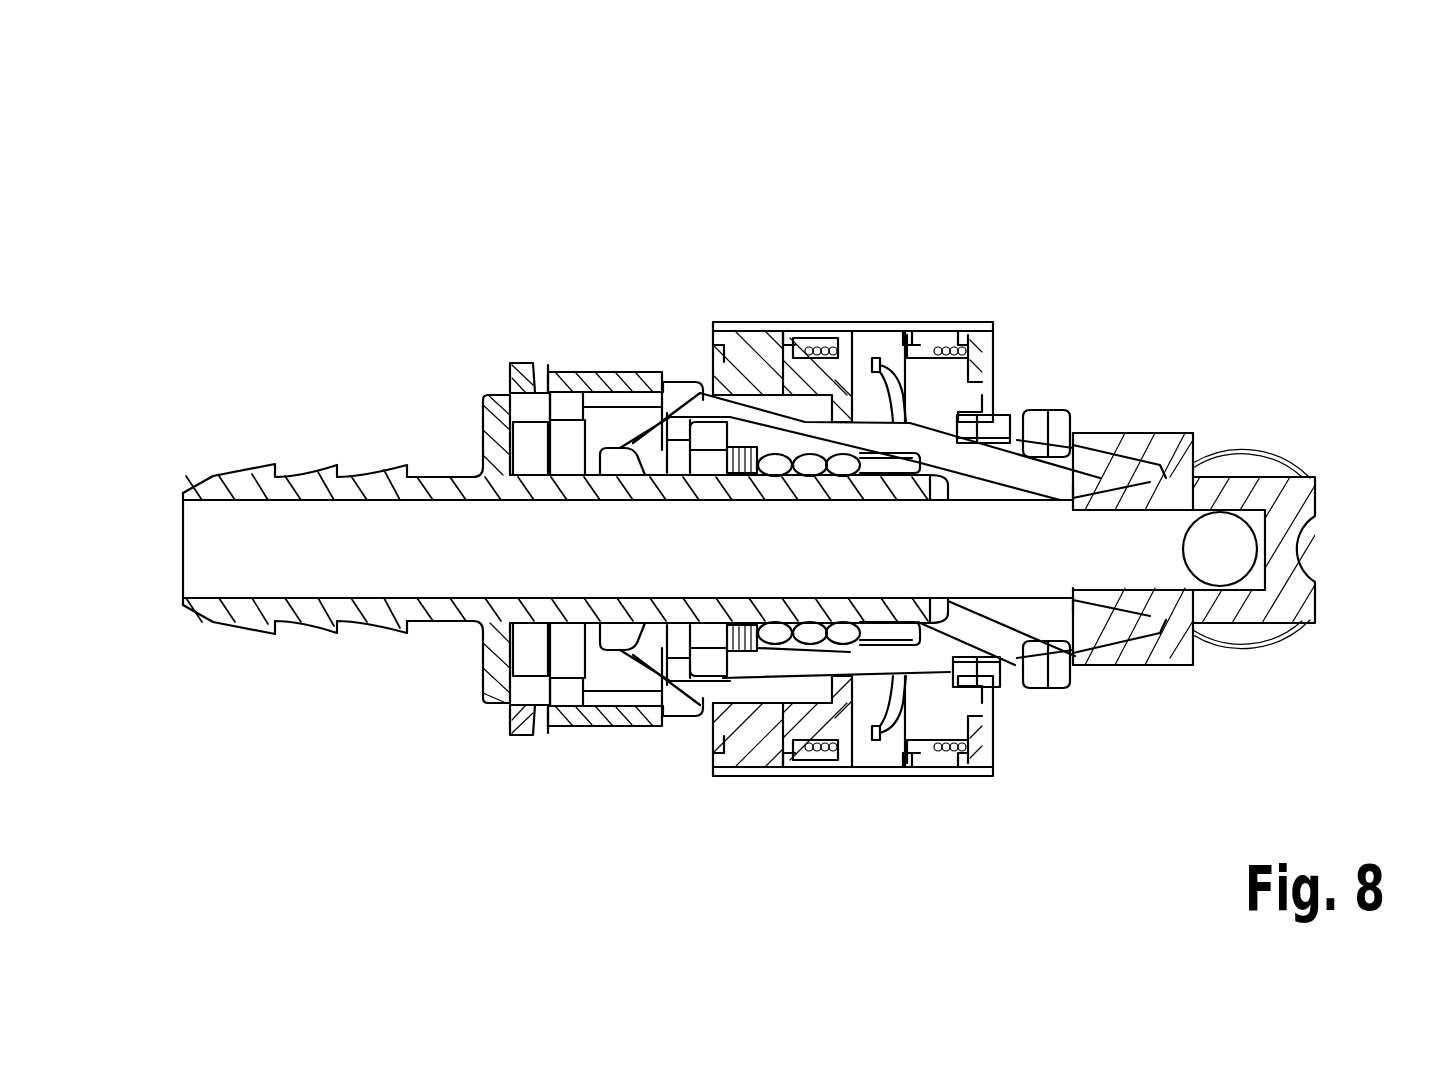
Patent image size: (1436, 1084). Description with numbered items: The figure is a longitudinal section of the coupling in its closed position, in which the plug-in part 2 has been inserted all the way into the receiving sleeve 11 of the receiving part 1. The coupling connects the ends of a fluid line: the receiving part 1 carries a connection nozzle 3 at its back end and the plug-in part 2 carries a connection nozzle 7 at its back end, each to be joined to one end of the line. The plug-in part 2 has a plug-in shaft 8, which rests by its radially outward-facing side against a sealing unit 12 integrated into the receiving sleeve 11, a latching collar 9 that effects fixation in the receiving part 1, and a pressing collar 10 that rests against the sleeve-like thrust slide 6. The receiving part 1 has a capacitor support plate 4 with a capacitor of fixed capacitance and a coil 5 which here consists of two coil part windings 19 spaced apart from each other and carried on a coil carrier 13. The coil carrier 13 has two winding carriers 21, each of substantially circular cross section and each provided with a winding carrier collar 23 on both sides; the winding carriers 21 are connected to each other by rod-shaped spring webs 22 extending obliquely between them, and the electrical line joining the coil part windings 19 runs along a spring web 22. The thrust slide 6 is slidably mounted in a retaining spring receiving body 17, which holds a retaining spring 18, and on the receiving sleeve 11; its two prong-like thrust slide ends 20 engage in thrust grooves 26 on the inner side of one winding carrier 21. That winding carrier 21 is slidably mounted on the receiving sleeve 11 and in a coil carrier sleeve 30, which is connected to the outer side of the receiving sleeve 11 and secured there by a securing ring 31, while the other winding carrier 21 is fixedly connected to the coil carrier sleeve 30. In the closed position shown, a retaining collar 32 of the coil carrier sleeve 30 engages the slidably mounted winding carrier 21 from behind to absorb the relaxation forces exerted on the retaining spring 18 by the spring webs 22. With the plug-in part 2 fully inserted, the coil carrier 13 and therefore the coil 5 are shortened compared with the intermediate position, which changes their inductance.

The receiving part 1 is at (1069, 216).
The plug-in part 2 is at (385, 327).
The connection nozzle 3 is at (1215, 460).
The capacitor support plate 4 is at (961, 396).
The coil 5 is at (808, 335).
The thrust slide 6 is at (672, 470).
The connection nozzle 7 is at (403, 624).
The plug-in shaft 8 is at (590, 370).
The latching collar 9 is at (607, 378).
The pressing collar 10 is at (490, 667).
The receiving sleeve 11 is at (880, 438).
The sealing unit 12 is at (735, 455).
The coil carrier 13 is at (1005, 378).
The retaining spring receiving body 17 is at (523, 378).
The retaining spring 18 is at (560, 742).
The coil part windings 19 is at (825, 335).
The thrust slide ends 20 is at (770, 680).
The winding carriers 21 is at (725, 330).
The spring webs 22 is at (888, 360).
The winding carrier collar 23 is at (785, 335).
The thrust grooves 26 is at (714, 355).
The coil carrier sleeve 30 is at (1010, 415).
The securing ring 31 is at (1040, 430).
The retaining collar 32 is at (757, 335).